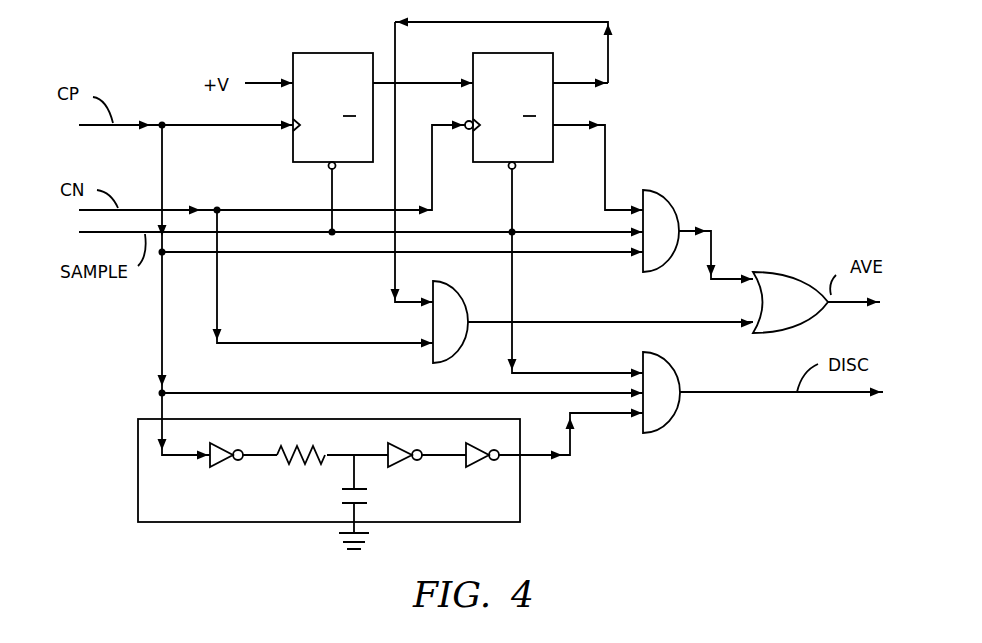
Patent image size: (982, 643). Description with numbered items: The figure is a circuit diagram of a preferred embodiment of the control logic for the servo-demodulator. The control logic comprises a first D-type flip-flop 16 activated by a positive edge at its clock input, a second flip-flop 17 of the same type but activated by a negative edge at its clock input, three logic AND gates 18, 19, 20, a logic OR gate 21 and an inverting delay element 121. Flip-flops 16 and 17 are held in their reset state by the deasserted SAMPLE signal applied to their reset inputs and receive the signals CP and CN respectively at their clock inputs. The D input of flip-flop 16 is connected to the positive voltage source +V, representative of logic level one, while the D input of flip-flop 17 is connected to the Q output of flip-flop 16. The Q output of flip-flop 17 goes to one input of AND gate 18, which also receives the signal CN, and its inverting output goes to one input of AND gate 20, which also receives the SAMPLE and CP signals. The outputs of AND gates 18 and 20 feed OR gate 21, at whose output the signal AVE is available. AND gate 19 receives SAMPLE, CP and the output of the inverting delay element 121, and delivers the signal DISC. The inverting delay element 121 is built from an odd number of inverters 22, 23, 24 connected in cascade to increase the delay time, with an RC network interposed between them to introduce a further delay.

The first D-type flip-flop 16 is at (305, 163).
The second flip-flop 17 is at (500, 165).
The logic AND gate 18 is at (445, 363).
The logic AND gate 19 is at (662, 355).
The logic AND gate 20 is at (657, 187).
The logic OR gate 21 is at (770, 268).
The inverter 22 is at (213, 467).
The inverter 23 is at (393, 467).
The inverter 24 is at (467, 467).
The inverting delay element 121 is at (138, 458).